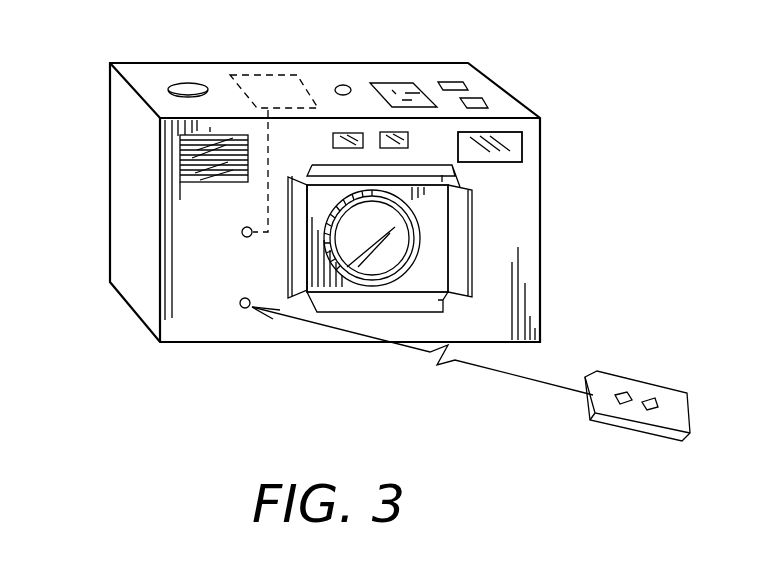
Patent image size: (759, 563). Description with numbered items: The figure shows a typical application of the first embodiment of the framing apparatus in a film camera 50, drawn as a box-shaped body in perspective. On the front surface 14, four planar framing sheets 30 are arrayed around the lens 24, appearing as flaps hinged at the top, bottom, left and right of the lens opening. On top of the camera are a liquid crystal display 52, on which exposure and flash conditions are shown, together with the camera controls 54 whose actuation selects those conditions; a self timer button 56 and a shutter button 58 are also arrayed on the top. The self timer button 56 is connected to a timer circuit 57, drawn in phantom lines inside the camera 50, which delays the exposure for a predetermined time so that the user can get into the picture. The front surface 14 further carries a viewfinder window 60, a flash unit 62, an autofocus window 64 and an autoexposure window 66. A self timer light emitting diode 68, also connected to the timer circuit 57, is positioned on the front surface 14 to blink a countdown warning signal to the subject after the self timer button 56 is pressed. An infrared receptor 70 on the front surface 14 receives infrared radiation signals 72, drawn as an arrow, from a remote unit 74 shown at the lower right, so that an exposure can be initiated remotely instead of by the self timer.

The front surface 14 is at (540, 211).
The lens 24 is at (403, 239).
The planar framing sheets 30 is at (441, 175).
The film camera 50 is at (540, 276).
The liquid crystal display 52 is at (413, 83).
The camera controls 54 is at (478, 100).
The self timer button 56 is at (345, 85).
The timer circuit 57 is at (243, 73).
The shutter button 58 is at (186, 83).
The viewfinder window 60 is at (524, 147).
The flash unit 62 is at (180, 155).
The autofocus window 64 is at (333, 139).
The autoexposure window 66 is at (397, 149).
The self timer light emitting diode 68 is at (242, 233).
The infrared receptor 70 is at (243, 309).
The infrared radiation signals 72 is at (503, 375).
The remote unit 74 is at (632, 393).